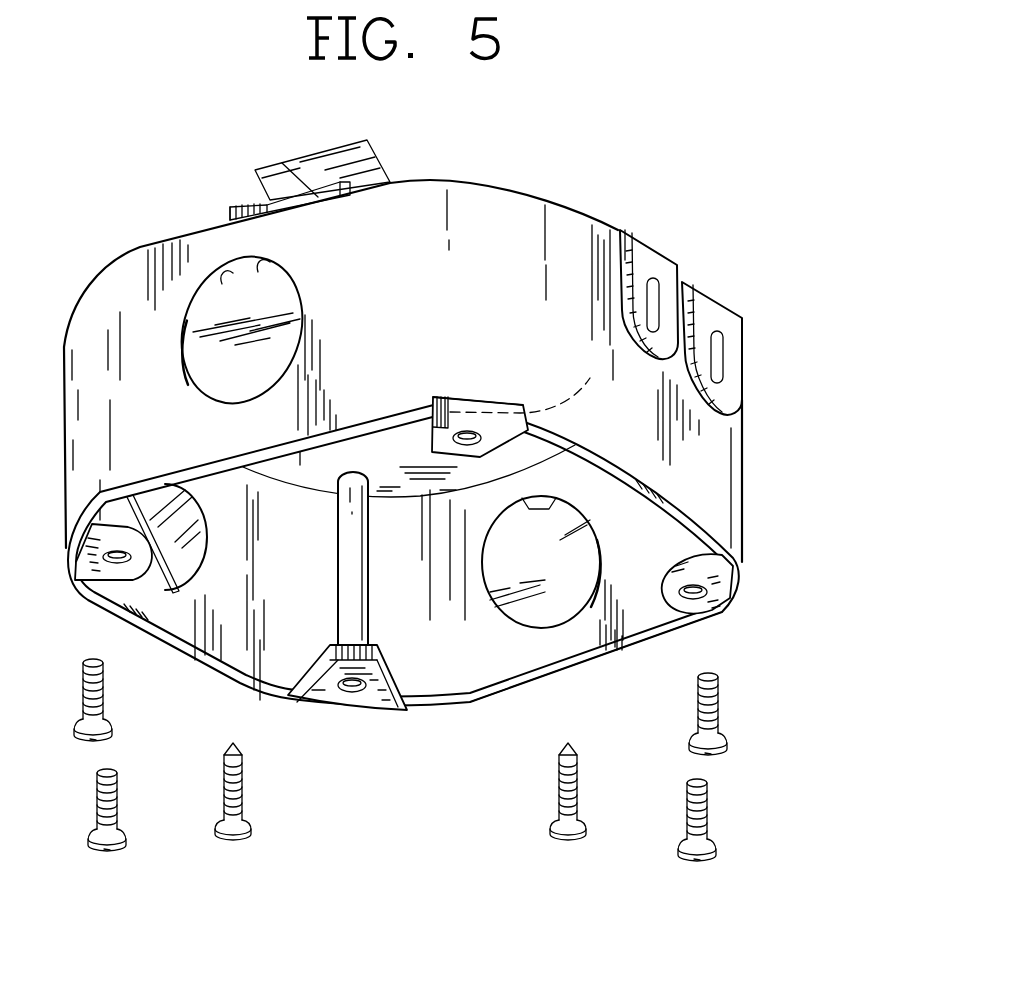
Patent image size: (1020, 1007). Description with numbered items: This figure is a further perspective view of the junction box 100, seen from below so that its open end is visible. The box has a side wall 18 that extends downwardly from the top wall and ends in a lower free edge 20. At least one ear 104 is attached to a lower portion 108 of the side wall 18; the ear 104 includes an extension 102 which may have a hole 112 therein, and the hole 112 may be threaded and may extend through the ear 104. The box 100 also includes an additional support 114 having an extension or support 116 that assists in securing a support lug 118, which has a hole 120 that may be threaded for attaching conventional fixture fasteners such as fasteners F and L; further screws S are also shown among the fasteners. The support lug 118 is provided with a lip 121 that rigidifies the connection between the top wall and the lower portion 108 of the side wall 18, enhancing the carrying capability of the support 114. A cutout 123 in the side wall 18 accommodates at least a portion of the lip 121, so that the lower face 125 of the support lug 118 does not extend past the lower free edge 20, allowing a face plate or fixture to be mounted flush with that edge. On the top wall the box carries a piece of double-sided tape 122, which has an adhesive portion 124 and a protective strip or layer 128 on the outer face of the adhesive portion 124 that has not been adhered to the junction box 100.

The junction box 100 is at (488, 316).
The side wall 18 is at (720, 474).
The lower free edge 20 is at (205, 470).
The extension 102 is at (756, 598).
The ear 104 is at (651, 578).
The lower portion 108 is at (556, 678).
The hole 112 is at (700, 598).
The additional support 114 is at (378, 617).
The extension or support 116 is at (347, 559).
The support lug 118 is at (253, 687).
The hole 120 is at (363, 695).
The lip 121 is at (463, 400).
The double-sided tape 122 is at (372, 179).
The cutout 123 is at (539, 383).
The adhesive portion 124 is at (290, 166).
The lower face 125 is at (400, 424).
The protective strip or layer 128 is at (368, 140).
The fixture fastener F is at (720, 717).
The self-tapping screw S is at (560, 805).
The fixture fastener L is at (707, 815).